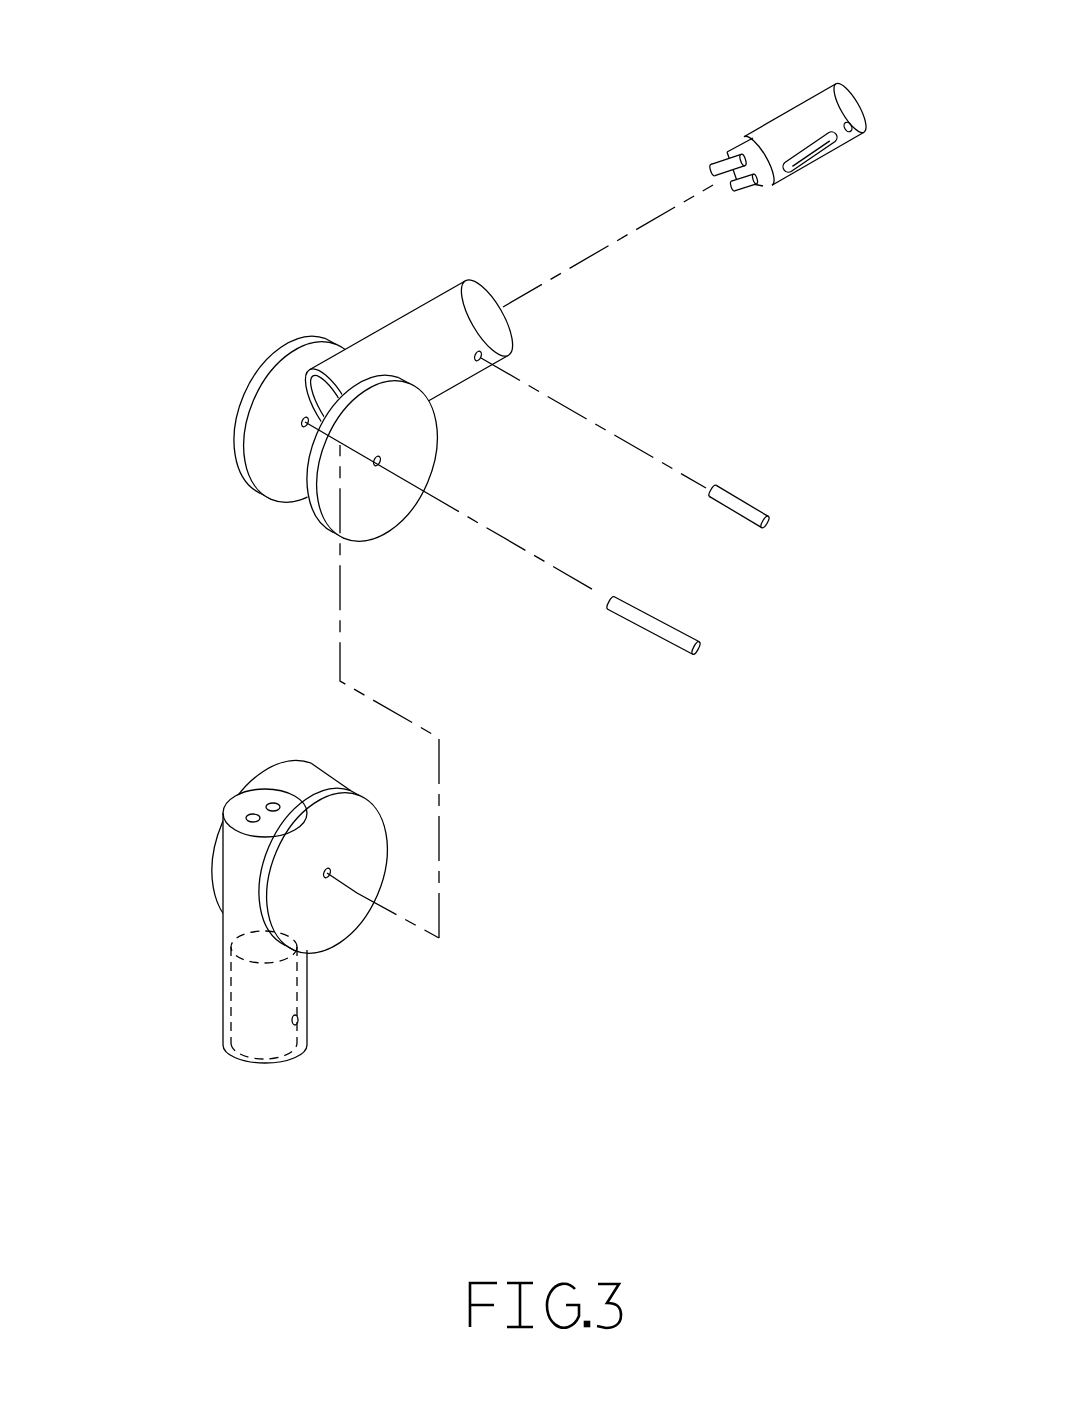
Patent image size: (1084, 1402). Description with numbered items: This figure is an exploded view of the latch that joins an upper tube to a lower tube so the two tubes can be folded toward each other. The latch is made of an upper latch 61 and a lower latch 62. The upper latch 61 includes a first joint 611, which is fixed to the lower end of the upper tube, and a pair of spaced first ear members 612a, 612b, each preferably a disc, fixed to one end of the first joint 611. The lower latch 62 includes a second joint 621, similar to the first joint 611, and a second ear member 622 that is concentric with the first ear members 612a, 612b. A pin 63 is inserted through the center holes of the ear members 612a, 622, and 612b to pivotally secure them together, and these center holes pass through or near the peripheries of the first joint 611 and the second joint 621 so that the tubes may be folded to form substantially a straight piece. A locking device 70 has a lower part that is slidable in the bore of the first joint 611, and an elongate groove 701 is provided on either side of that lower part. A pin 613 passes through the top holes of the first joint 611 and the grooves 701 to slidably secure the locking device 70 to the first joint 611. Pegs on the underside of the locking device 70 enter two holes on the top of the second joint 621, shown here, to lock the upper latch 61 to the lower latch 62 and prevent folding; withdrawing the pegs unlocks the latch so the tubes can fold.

The upper latch 61 is at (281, 322).
The first joint 611 is at (440, 322).
The first ear member 612a is at (375, 505).
The first ear member 612b is at (263, 461).
The pin 613 is at (750, 510).
The lower latch 62 is at (345, 1022).
The second joint 621 is at (228, 1006).
The second ear member 622 is at (333, 913).
The pin 63 is at (678, 634).
The locking device 70 is at (811, 115).
The elongate groove 701 is at (832, 148).